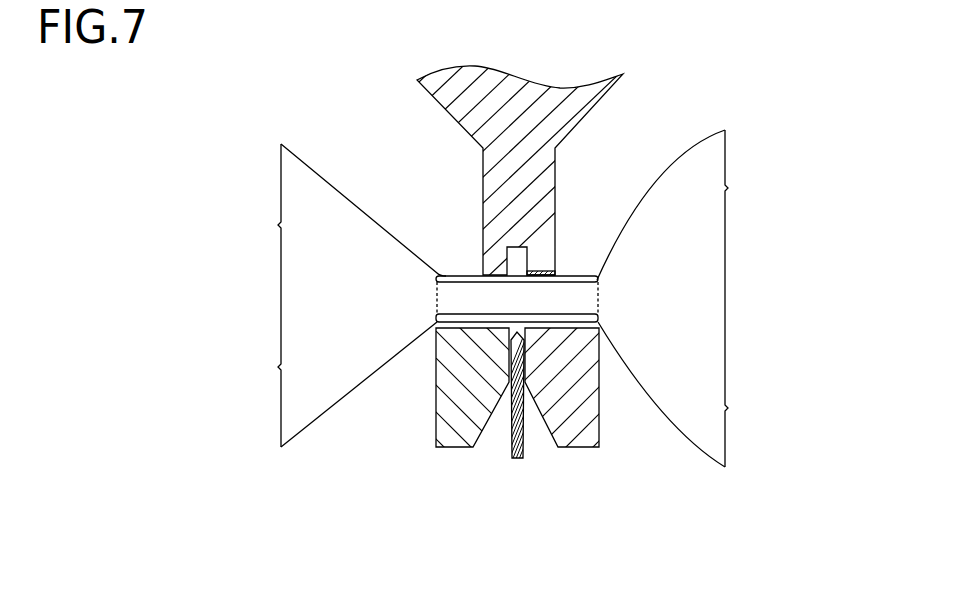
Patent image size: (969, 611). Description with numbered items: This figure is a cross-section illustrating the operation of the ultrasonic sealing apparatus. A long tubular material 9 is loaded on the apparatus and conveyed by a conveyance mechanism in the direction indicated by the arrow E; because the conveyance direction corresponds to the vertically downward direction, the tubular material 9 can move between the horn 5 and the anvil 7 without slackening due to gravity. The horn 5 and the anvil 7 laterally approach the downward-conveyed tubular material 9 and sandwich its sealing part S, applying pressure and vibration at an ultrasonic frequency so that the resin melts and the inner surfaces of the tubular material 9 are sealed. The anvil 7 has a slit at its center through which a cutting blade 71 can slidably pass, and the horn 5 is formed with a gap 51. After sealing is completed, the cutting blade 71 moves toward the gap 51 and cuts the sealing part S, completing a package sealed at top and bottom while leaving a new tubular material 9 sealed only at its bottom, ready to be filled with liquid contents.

The horn 5 is at (463, 121).
The gap 51 is at (566, 275).
The sealing part S is at (458, 268).
The tubular material 9 is at (710, 160).
The anvil 7 is at (455, 446).
The cutting blade 71 is at (518, 459).
The arrow indicating conveyance direction E is at (755, 383).